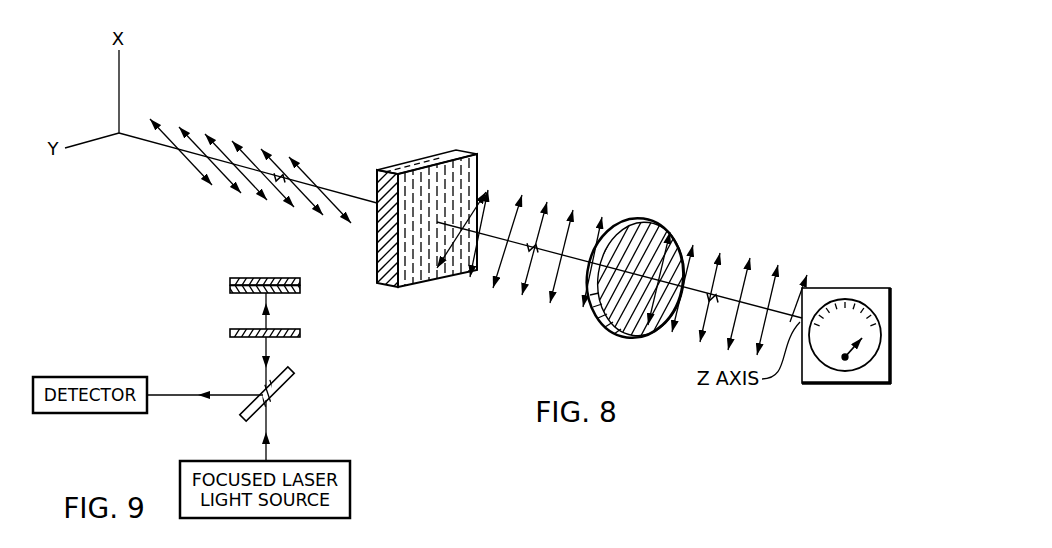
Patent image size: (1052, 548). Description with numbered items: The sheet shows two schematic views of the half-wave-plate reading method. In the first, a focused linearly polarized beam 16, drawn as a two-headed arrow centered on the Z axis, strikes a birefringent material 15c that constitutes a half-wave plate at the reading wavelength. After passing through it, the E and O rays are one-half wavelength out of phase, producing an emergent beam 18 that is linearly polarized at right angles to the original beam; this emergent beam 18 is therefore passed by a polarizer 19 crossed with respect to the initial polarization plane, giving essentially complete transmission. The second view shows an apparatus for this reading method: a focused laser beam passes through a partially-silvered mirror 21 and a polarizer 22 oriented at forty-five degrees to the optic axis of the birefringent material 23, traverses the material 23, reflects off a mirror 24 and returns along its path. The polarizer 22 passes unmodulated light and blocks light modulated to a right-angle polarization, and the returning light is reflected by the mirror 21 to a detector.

In FIG. 8, the linearly polarized beam 16 is at (282, 167).
In FIG. 8, the birefringent material 15c is at (475, 158).
In FIG. 8, the emergent beam 18 is at (512, 212).
In FIG. 8, the polarizer 19 is at (673, 232).
In FIG. 9, the partially-silvered mirror 21 is at (293, 390).
In FIG. 9, the polarizer 22 is at (230, 331).
In FIG. 9, the birefringent material 23 is at (237, 293).
In FIG. 9, the mirror 24 is at (243, 278).